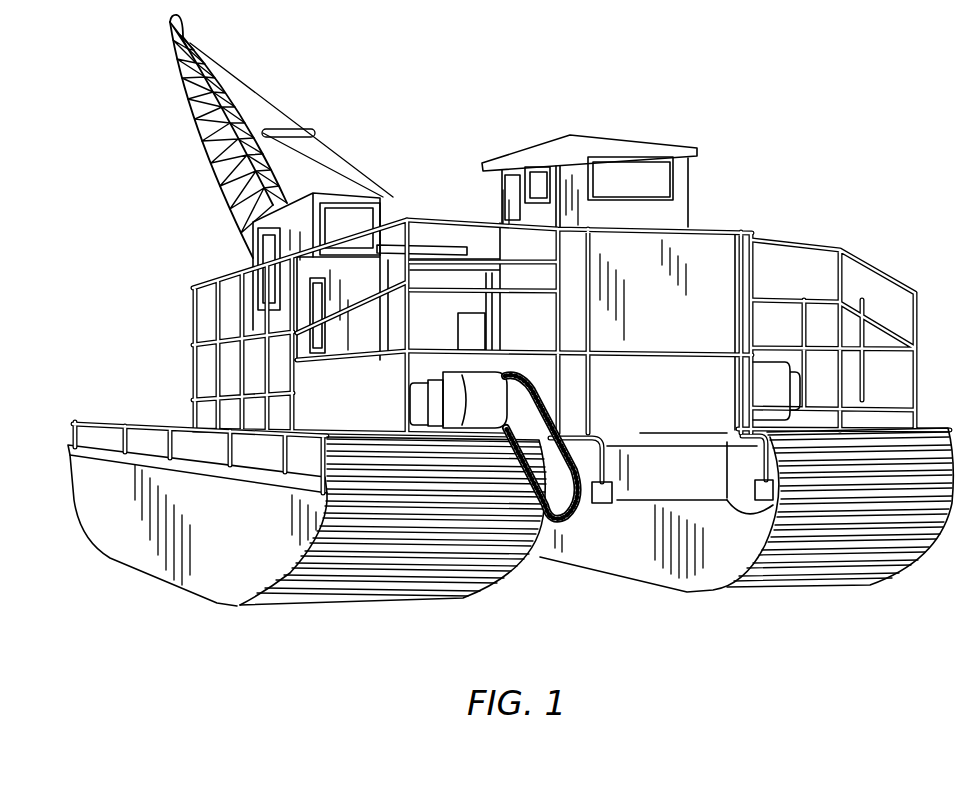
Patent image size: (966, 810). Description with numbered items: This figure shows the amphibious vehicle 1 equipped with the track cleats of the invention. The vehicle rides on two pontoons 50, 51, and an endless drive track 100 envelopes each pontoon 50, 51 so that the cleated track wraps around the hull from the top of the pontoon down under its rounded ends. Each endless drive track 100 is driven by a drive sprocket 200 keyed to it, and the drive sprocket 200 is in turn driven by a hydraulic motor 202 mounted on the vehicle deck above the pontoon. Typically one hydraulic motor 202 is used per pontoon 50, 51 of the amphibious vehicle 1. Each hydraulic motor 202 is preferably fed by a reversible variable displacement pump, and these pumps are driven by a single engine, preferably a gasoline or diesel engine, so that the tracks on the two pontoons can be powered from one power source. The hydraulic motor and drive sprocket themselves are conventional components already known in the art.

The amphibious vehicle 1 is at (698, 101).
The pontoon 50 is at (160, 562).
The pontoon 51 is at (656, 570).
The endless drive track 100 is at (377, 585).
The drive sprocket 200 is at (562, 510).
The hydraulic motor 202 is at (420, 403).